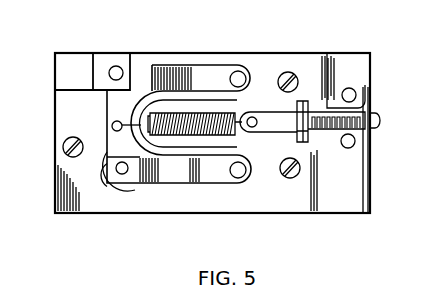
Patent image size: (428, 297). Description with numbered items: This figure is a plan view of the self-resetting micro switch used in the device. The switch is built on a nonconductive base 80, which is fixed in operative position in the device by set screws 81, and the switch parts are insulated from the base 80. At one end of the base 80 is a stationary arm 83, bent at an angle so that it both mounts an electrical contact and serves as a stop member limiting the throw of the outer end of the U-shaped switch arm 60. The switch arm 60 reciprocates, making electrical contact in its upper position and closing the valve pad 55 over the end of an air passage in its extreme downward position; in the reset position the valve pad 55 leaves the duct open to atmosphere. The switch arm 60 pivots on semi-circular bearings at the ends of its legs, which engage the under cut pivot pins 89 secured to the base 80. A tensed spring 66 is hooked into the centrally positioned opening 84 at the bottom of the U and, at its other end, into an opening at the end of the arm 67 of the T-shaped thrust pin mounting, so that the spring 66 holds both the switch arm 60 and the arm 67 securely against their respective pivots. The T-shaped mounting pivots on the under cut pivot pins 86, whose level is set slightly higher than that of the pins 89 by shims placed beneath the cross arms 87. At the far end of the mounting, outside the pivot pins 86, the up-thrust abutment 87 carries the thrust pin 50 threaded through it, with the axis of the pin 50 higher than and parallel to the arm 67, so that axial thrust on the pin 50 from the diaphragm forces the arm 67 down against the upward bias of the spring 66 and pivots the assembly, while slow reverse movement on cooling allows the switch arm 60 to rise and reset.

The thrust pin 50 is at (321, 132).
The valve pad 55 is at (113, 192).
The U-shaped switch arm 60 is at (198, 63).
The tensed spring 66 is at (190, 130).
The arm of the T-shaped thrust pin mounting 67 is at (268, 113).
The nonconductive base 80 is at (68, 120).
The set screws 81 is at (63, 150).
The stationary arm 83 is at (68, 70).
The centrally positioned opening 84 is at (113, 123).
The under cut pivot pins 86 is at (356, 90).
The up-thrust abutment 87 is at (370, 152).
The under cut pivot pins 89 is at (245, 70).